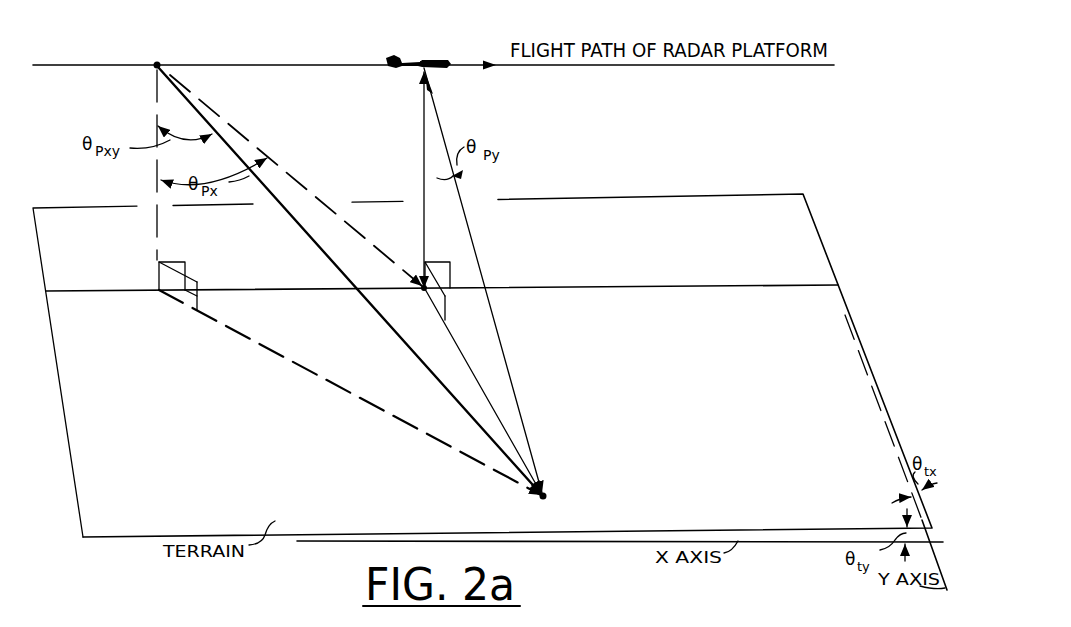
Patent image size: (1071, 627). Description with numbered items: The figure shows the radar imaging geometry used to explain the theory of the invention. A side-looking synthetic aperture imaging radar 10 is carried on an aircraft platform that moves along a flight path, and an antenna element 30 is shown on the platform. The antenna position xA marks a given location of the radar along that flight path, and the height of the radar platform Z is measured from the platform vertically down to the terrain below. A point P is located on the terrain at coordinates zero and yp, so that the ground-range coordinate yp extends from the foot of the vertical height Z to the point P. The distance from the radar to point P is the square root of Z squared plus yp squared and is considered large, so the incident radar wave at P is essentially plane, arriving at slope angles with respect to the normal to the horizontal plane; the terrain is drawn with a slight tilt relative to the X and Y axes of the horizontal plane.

The side-looking synthetic aperture imaging radar 10 is at (420, 69).
The radar antenna 30 is at (438, 60).
The antenna position xA is at (157, 62).
The height of the radar platform Z is at (424, 117).
The y coordinate of point P yp is at (462, 344).
The point P is at (586, 502).